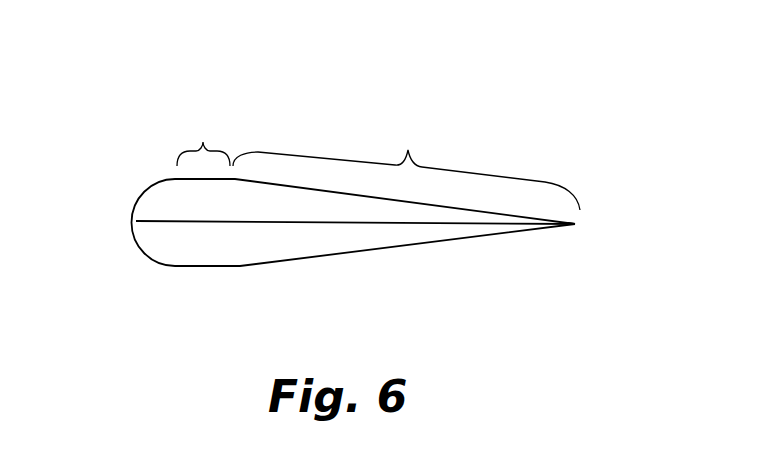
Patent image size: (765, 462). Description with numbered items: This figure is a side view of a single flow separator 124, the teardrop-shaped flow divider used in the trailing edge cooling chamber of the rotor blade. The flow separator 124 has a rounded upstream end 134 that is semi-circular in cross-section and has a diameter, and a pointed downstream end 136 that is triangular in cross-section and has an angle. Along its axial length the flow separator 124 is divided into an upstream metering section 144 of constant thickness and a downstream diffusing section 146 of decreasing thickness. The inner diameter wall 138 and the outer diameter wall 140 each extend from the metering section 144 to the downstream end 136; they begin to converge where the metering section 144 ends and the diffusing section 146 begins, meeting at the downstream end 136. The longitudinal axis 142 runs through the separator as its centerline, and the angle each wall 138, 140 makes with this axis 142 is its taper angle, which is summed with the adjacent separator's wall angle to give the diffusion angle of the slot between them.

The flow separator 124 is at (117, 92).
The upstream end 134 is at (137, 229).
The downstream end 136 is at (577, 225).
The inner diameter wall 138 is at (292, 262).
The outer diameter wall 140 is at (457, 208).
The longitudinal axis 142 is at (392, 223).
The metering section 144 is at (203, 142).
The diffusing section 146 is at (406, 167).